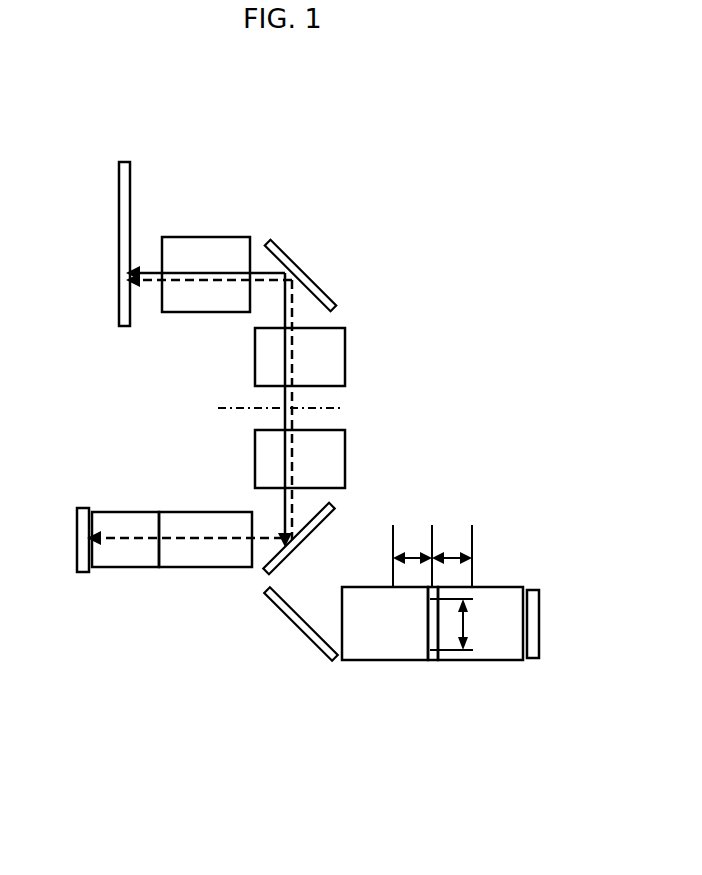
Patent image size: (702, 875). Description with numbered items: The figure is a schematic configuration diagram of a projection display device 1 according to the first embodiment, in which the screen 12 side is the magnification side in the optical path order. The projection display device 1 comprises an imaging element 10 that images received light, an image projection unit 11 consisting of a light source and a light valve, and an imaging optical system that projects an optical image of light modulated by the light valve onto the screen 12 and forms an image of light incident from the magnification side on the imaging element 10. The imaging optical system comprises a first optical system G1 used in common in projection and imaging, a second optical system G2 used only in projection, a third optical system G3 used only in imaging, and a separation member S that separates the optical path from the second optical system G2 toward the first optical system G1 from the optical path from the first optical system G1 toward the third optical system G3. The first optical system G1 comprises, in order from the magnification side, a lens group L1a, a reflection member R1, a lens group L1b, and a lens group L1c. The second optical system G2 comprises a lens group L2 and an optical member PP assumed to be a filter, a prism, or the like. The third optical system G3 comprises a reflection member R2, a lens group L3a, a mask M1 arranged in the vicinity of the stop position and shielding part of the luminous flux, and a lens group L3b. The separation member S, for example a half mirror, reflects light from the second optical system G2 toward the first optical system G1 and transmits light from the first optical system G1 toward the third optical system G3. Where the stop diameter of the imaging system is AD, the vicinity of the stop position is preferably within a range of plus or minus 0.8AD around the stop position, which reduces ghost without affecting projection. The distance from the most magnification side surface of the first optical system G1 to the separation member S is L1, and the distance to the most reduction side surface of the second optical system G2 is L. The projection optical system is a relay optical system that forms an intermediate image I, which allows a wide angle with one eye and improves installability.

The projection display device 1 is at (313, 133).
The imaging element 10 is at (540, 640).
The image projection unit 11 is at (77, 553).
The screen 12 is at (118, 279).
The first optical system G1 is at (355, 332).
The lens group L1a is at (225, 237).
The reflection member R1 is at (313, 276).
The lens group L1b is at (345, 357).
The lens group L1c is at (376, 440).
The distance from most magnification side surface of first optical system to separat L1 is at (285, 376).
The intermediate image I is at (273, 410).
The distance from most magnification side surface of first optical system to most re L is at (117, 532).
The separation member S is at (320, 540).
The second optical system G2 is at (172, 594).
The optical member PP is at (122, 567).
The lens group L2 is at (205, 577).
The third optical system G3 is at (393, 680).
The reflection member R2 is at (299, 637).
The lens group L3a is at (368, 660).
The mask M1 is at (430, 660).
The lens group L3b is at (480, 661).
The stop diameter AD is at (463, 624).
The range around stop position 0.8AD is at (452, 550).